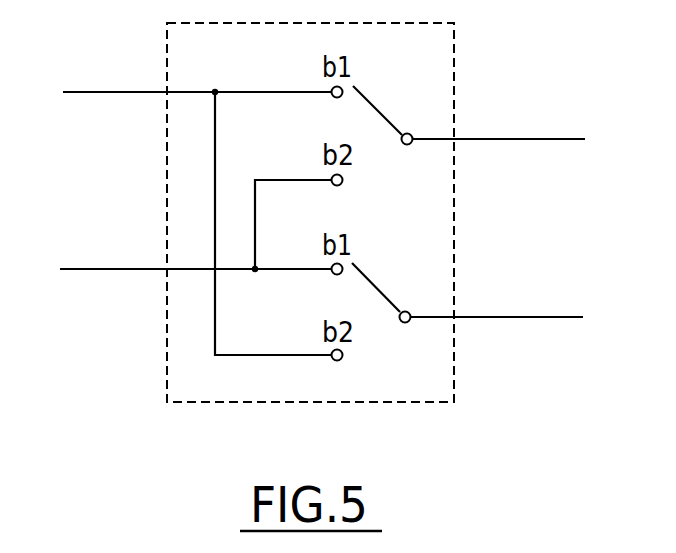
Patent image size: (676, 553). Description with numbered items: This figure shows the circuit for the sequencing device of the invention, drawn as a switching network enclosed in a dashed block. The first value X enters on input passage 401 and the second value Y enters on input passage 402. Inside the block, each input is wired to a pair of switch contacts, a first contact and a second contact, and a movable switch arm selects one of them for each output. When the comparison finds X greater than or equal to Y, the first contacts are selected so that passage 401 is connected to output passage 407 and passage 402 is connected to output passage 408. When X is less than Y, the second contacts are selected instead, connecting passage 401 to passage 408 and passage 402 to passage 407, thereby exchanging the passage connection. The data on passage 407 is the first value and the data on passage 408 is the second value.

The input passage 401 is at (96, 92).
The input passage 402 is at (94, 269).
The output passage 407 is at (563, 139).
The output passage 408 is at (562, 317).